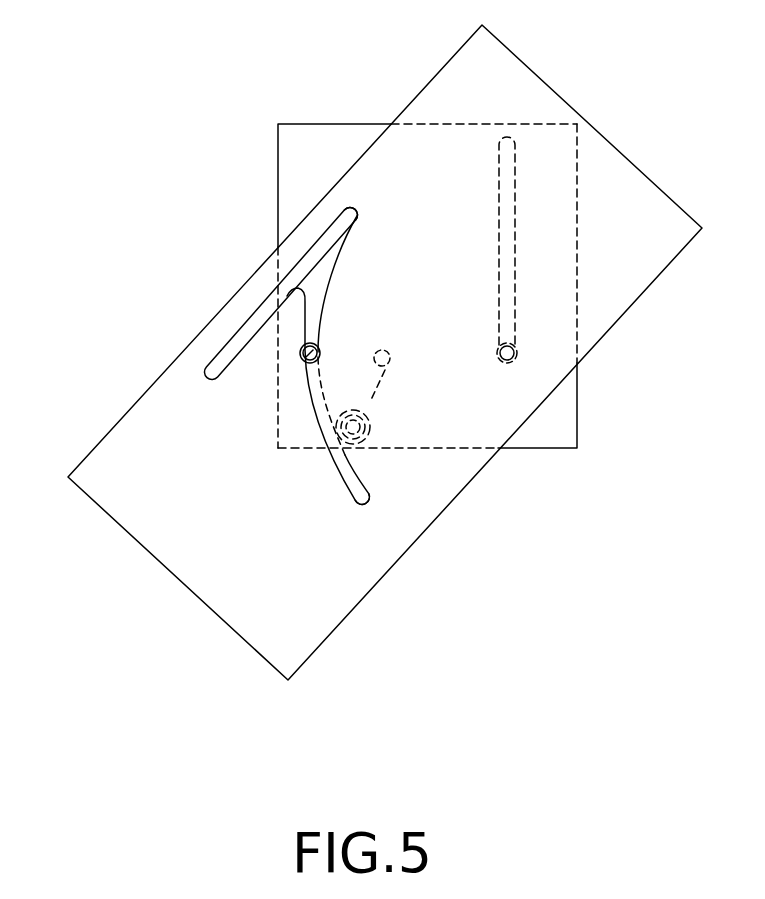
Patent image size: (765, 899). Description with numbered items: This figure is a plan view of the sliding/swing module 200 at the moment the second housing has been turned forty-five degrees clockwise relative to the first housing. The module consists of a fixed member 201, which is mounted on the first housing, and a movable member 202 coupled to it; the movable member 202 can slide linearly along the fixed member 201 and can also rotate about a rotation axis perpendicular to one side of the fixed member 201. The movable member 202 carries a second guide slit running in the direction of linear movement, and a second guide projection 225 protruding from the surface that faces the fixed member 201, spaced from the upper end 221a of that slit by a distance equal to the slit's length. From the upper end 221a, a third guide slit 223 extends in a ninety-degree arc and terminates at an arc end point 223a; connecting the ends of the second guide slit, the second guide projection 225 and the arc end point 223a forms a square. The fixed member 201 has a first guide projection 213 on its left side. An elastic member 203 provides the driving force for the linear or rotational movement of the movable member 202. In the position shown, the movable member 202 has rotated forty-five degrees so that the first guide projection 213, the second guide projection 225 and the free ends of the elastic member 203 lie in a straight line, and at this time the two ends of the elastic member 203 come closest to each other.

The sliding/swing module 200 is at (244, 49).
The fixed member 201 is at (383, 282).
The movable member 202 is at (360, 352).
The elastic member 203 is at (390, 427).
The first guide projection 213 is at (303, 357).
The upper end of the second guide slit 221a is at (350, 212).
The third guide slit 223 is at (342, 463).
The arc end point of the third guide slit 223a is at (366, 497).
The second guide projection 225 is at (515, 351).